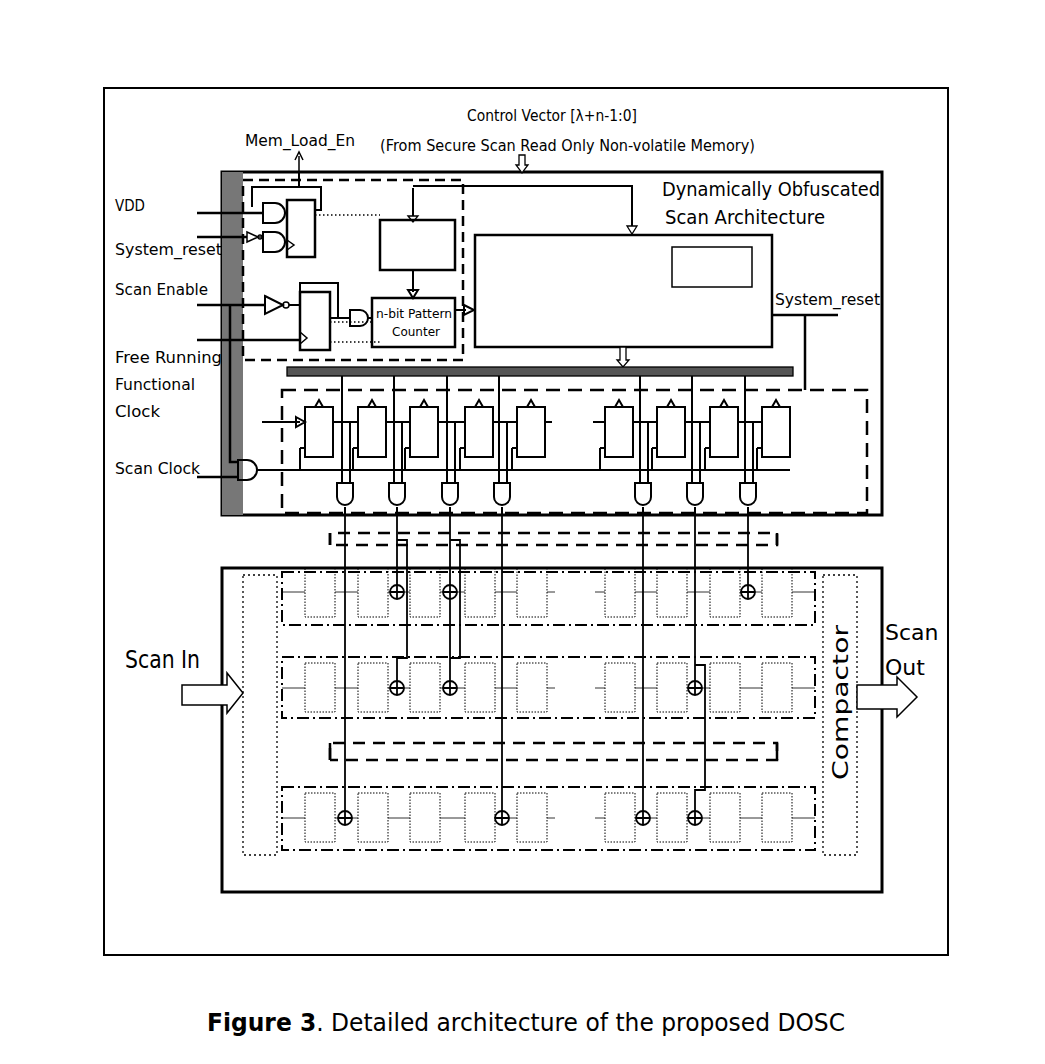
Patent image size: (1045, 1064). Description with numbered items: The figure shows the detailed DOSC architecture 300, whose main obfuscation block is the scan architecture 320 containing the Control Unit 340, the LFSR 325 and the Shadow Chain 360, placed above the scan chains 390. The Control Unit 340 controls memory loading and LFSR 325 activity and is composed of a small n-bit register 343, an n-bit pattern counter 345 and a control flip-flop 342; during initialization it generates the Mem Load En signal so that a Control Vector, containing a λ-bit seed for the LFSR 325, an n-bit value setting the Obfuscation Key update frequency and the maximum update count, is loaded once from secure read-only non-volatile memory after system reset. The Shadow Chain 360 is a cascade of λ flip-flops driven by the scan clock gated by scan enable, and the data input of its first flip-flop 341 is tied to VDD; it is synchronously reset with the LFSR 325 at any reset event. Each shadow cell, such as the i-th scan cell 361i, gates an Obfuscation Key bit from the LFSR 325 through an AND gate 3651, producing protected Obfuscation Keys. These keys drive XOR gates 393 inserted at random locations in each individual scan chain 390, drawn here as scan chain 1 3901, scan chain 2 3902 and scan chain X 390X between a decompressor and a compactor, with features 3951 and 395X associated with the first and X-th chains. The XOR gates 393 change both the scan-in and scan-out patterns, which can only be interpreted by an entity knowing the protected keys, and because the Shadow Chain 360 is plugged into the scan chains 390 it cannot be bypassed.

The DOSC architecture 300 is at (819, 86).
The dynamically obfuscated scan architecture 320 is at (883, 170).
The LFSR 325 is at (623, 291).
The Control Unit 340 is at (329, 183).
The first flip-flop 341 is at (200, 211).
The control flip-flop 342 is at (296, 327).
The n-bit register 343 is at (396, 220).
The n-bit pattern counter 345 is at (297, 343).
The Shadow Chain 360 is at (483, 410).
The i-th scan cell 361i is at (530, 458).
The AND gate 3651 is at (330, 503).
The XOR gates 393 is at (322, 751).
The scan chain 390 is at (219, 889).
The scan chain 1 3901 is at (817, 585).
The scan chain 2 3902 is at (814, 707).
The scan chain X 390X is at (815, 827).
The decompressor 3951 is at (220, 570).
The XOR gate 395X is at (397, 707).